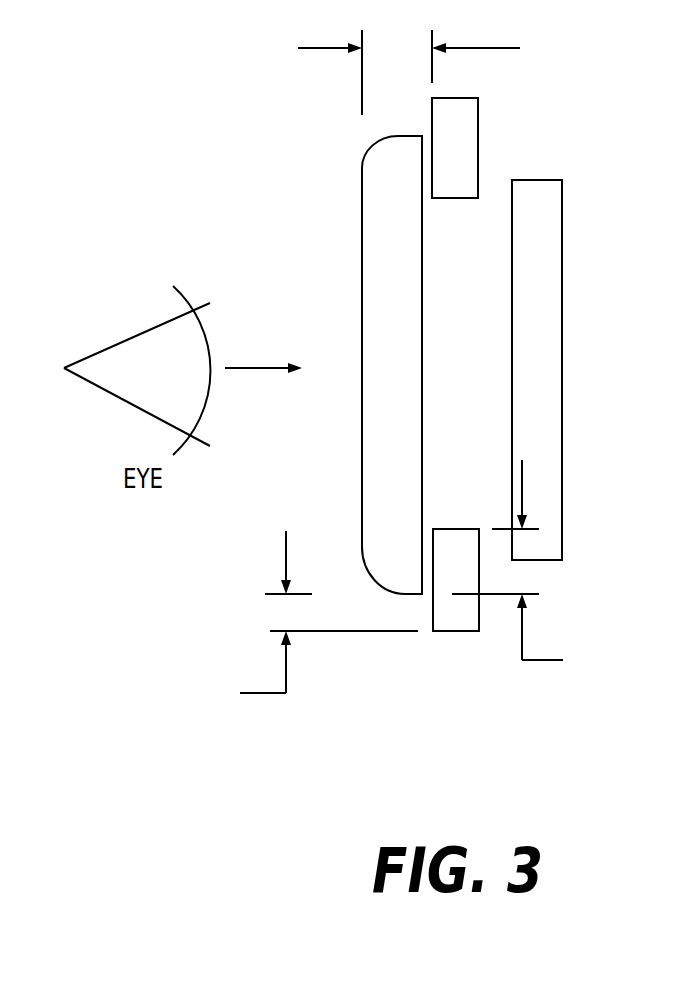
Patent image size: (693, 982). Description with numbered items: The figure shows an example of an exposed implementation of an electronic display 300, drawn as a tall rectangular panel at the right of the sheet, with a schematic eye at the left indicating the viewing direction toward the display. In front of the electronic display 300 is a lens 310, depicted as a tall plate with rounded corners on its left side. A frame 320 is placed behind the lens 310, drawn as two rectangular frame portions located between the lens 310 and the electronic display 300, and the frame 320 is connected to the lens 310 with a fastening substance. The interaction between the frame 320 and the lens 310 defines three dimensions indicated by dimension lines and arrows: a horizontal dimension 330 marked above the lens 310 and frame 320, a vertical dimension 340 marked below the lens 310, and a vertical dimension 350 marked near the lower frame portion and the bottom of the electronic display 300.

The electronic display 300 is at (562, 377).
The lens 310 is at (422, 312).
The frame 320 is at (478, 145).
The dimension 330 is at (429, 72).
The dimension 340 is at (310, 620).
The dimension 350 is at (528, 566).